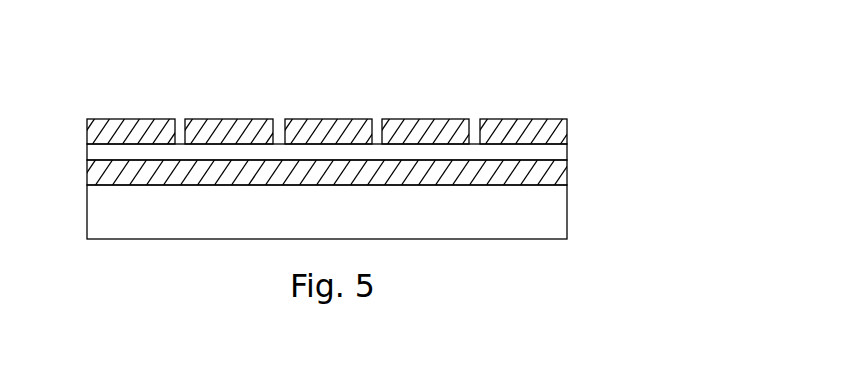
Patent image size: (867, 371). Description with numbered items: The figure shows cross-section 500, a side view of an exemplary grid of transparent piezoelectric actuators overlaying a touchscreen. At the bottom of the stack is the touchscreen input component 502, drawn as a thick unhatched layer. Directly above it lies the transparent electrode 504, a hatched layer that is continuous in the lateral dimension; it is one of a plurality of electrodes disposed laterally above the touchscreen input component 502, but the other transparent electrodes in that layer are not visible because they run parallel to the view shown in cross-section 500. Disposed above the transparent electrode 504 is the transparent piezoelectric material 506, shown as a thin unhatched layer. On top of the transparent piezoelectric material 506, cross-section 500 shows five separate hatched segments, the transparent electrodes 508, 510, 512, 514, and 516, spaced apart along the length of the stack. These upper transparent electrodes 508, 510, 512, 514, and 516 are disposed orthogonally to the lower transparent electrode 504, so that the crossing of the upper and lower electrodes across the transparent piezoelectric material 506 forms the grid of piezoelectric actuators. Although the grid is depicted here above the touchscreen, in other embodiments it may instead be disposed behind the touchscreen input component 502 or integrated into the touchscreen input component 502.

The cross-section 500 is at (676, 36).
The touchscreen input component 502 is at (565, 215).
The transparent electrode 504 is at (565, 173).
The transparent piezoelectric material 506 is at (565, 152).
The transparent electrode 508 is at (123, 118).
The transparent electrode 510 is at (222, 118).
The transparent electrode 512 is at (320, 118).
The transparent electrode 514 is at (418, 118).
The transparent electrode 516 is at (516, 118).